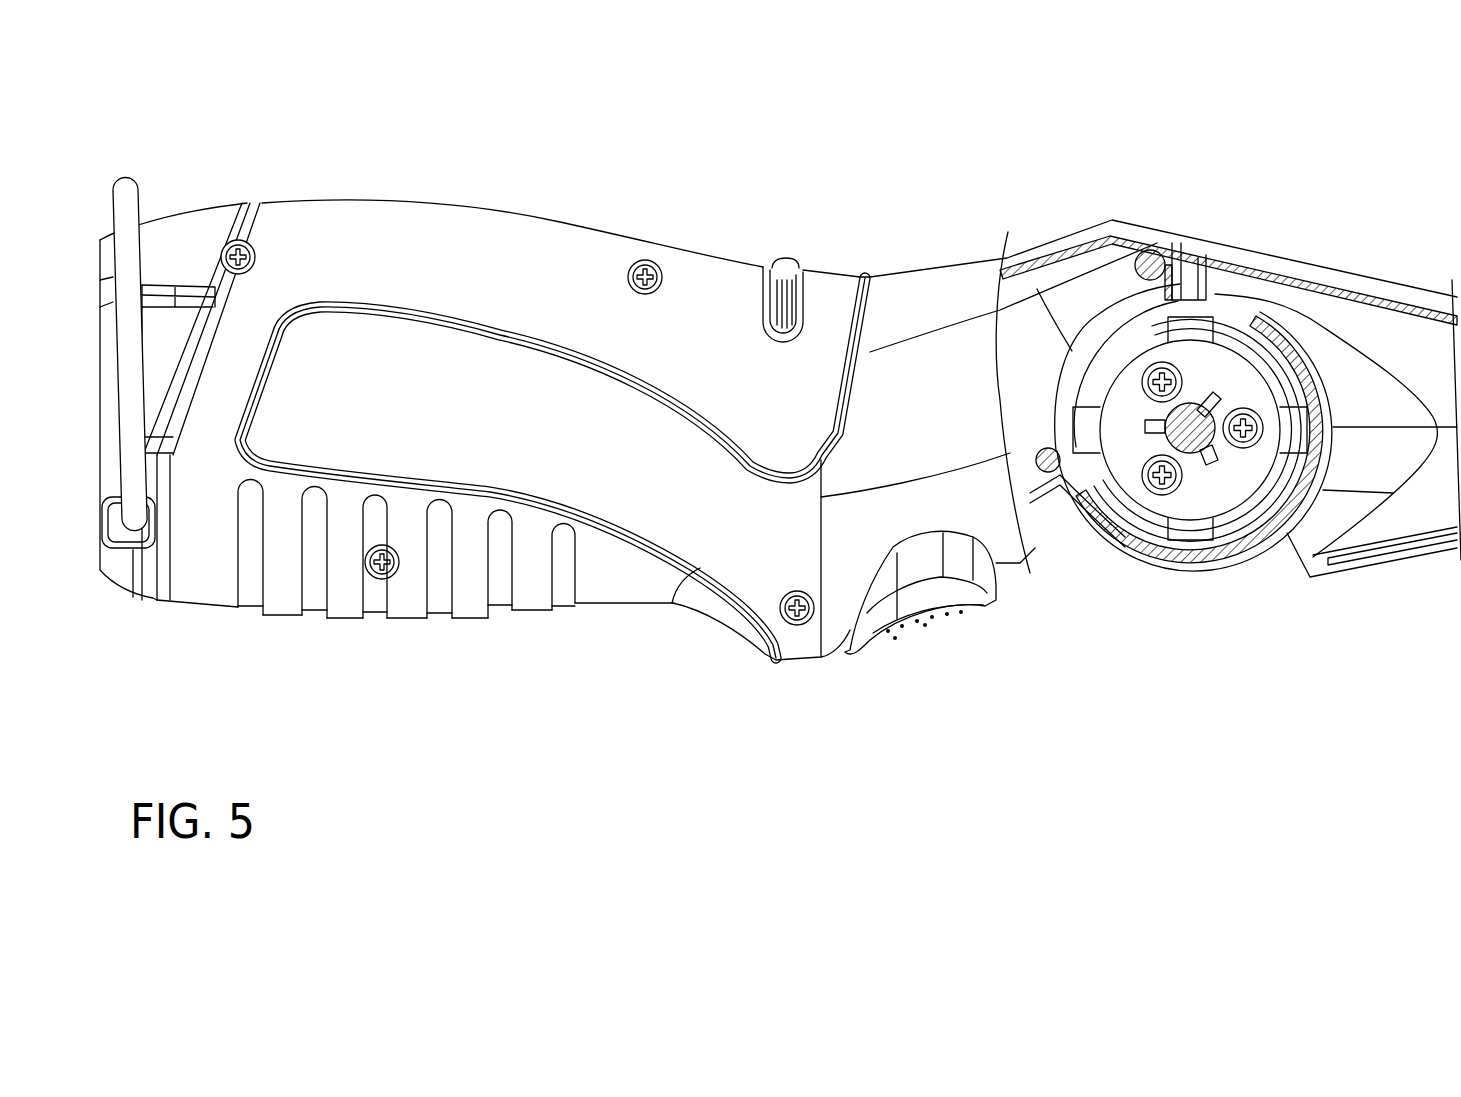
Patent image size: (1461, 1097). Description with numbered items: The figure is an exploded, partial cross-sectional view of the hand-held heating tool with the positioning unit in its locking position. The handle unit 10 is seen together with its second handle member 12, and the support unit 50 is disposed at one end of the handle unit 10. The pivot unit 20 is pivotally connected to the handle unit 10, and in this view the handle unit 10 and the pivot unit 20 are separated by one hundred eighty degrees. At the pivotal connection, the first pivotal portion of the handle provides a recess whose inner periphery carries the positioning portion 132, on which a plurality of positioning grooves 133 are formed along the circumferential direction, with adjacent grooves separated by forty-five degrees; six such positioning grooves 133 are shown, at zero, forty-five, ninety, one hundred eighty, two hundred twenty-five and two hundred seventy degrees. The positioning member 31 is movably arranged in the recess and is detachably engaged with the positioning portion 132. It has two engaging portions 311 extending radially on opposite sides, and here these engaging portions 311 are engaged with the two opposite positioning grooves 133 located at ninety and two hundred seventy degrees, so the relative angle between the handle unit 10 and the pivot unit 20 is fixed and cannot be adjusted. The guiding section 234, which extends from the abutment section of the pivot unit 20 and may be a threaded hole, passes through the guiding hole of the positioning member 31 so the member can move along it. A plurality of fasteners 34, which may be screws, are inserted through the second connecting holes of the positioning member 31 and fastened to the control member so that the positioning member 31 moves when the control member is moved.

The handle unit 10 is at (705, 240).
The second handle member 12 is at (467, 603).
The pivot unit 20 is at (1378, 592).
The positioning member 31 is at (1262, 508).
The engaging portions 311 is at (1190, 295).
The positioning portion 132 is at (1270, 505).
The positioning grooves 133 is at (1205, 310).
The guiding section 234 is at (1207, 415).
The fasteners 34 is at (1158, 487).
The support unit 50 is at (129, 158).